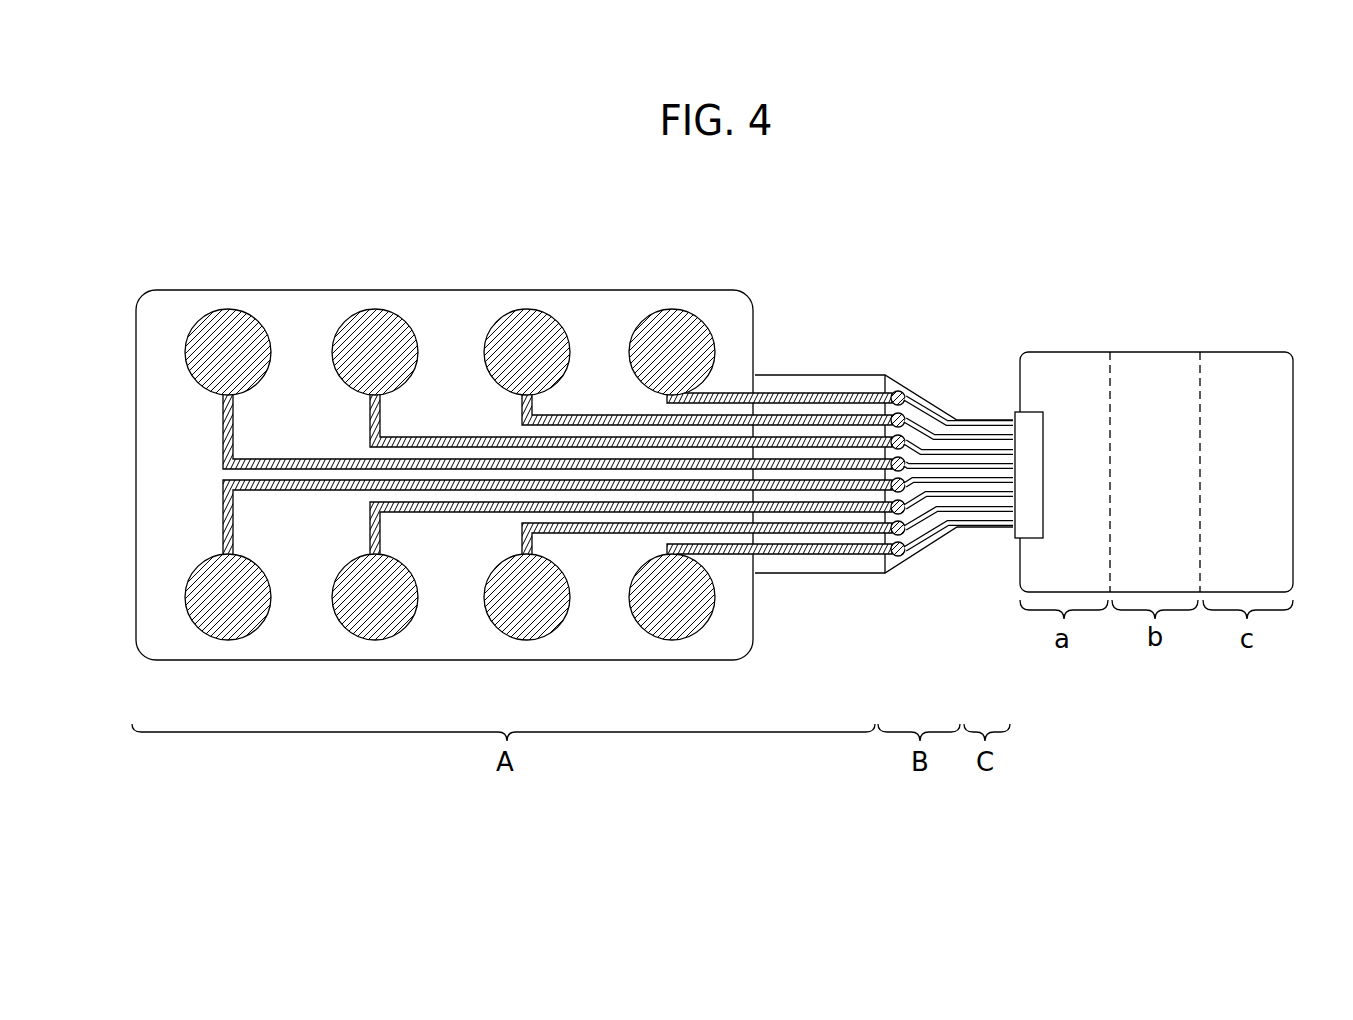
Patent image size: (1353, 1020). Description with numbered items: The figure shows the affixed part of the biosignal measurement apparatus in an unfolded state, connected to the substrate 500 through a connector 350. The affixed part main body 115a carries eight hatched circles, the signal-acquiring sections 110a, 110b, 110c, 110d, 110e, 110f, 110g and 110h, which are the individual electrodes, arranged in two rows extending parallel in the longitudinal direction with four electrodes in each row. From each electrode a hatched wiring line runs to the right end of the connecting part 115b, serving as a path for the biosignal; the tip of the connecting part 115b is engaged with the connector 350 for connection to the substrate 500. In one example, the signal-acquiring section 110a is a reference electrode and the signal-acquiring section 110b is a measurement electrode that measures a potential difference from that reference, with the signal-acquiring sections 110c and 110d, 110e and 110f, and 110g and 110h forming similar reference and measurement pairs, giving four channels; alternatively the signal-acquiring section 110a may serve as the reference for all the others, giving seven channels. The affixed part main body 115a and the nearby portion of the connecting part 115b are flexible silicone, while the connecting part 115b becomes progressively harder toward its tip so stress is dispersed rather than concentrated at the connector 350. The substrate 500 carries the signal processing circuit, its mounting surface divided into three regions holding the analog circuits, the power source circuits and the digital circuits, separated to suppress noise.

The signal-acquiring section 110a is at (205, 306).
The signal-acquiring section 110b is at (352, 306).
The signal-acquiring section 110c is at (501, 306).
The signal-acquiring section 110d is at (645, 308).
The signal-acquiring section 110e is at (205, 637).
The signal-acquiring section 110f is at (352, 637).
The signal-acquiring section 110g is at (505, 636).
The signal-acquiring section 110h is at (645, 637).
The affixed part main body 115a is at (132, 221).
The connecting part 115b is at (757, 221).
The connector 350 is at (1010, 540).
The substrate 500 is at (1212, 352).